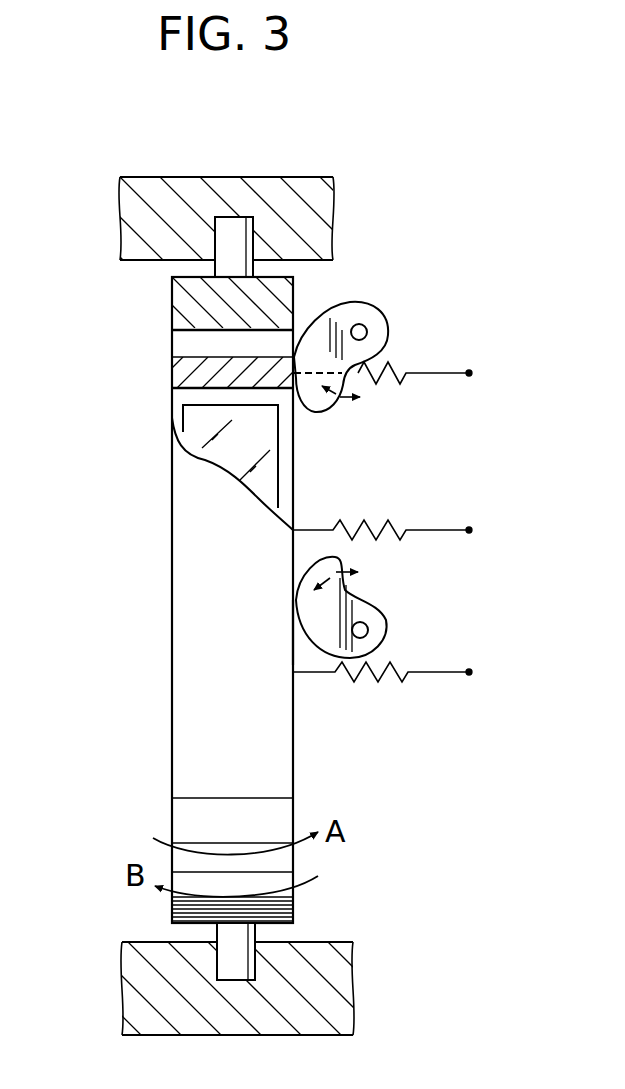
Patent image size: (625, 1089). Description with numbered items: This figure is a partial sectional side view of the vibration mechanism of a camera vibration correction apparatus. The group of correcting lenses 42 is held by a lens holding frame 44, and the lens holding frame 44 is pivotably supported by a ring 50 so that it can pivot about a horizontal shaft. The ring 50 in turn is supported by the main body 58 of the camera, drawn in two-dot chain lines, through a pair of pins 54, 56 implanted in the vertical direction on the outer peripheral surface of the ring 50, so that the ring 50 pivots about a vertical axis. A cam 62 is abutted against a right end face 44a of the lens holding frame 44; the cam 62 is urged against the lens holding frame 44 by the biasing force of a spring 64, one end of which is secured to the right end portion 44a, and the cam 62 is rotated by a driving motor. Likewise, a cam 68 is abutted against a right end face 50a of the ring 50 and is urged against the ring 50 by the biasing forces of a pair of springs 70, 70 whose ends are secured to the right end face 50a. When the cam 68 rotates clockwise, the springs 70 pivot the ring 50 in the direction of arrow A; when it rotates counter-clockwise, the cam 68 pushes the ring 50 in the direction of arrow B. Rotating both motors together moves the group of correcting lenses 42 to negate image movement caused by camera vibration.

The group of correcting lenses 42 is at (195, 423).
The lens holding frame 44 is at (180, 375).
The right end face of the lens holding frame 44a is at (312, 407).
The ring 50 is at (188, 312).
The right end face of the ring 50a is at (297, 635).
The pin 54 is at (228, 263).
The pin 56 is at (215, 930).
The main body of the camera 58 is at (312, 183).
The cam 62 is at (356, 302).
The spring 64 is at (397, 378).
The cam 68 is at (357, 607).
The spring 70 is at (394, 523).